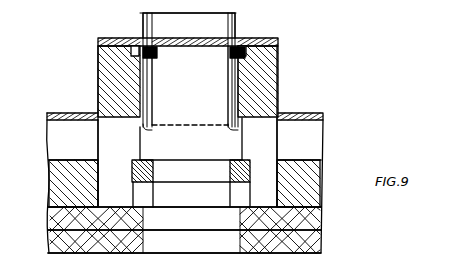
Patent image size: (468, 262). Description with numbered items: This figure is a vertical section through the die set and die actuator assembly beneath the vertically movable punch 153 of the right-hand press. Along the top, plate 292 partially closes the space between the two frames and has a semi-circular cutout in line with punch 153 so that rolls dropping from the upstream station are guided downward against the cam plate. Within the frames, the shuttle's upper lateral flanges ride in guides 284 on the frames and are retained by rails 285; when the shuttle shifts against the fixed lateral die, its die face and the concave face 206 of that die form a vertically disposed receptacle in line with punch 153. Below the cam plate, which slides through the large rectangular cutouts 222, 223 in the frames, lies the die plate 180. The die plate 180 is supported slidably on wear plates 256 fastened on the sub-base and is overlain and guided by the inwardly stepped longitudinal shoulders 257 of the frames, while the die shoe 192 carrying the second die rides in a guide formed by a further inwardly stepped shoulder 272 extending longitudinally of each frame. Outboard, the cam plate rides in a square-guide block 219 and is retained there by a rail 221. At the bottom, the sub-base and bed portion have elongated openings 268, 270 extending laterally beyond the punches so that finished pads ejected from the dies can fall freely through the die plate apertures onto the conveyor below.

The vertically movable punch 153 is at (145, 25).
The die plate 180 is at (228, 170).
The die shoe 192 is at (228, 133).
The concave face 206 is at (205, 98).
The square-guide block 219 is at (310, 189).
The rail 221 is at (293, 112).
The rectangular cutout 222 is at (278, 146).
The rectangular cutout 223 is at (103, 180).
The wear plate 256 is at (140, 195).
The longitudinal shoulder 257 is at (135, 163).
The elongated opening 268 is at (143, 218).
The elongated opening 270 is at (143, 238).
The inwardly stepped shoulder 272 is at (140, 127).
The guide 284 is at (152, 53).
The rail 285 is at (280, 44).
The plate 292 is at (102, 38).